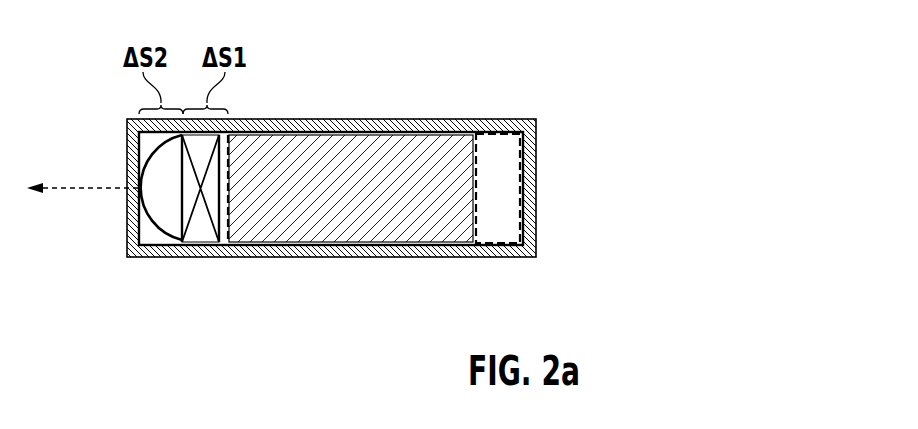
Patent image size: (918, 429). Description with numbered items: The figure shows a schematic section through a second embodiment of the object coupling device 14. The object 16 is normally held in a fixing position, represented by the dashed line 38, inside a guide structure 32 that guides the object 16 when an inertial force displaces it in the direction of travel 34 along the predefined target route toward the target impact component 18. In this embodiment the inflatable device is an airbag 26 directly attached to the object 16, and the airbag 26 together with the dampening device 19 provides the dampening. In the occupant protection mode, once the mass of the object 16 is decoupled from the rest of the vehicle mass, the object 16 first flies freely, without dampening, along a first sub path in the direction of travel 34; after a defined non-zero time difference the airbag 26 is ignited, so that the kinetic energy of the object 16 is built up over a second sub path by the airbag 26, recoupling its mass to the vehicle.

The object coupling device 14 is at (548, 78).
The object 16 is at (333, 227).
The target impact component 18 is at (128, 197).
The dampening device 19 is at (250, 102).
The airbag 26 is at (200, 232).
The guide structure 32 is at (415, 120).
The direction of travel 34 is at (70, 188).
The dashed line 38 is at (522, 158).